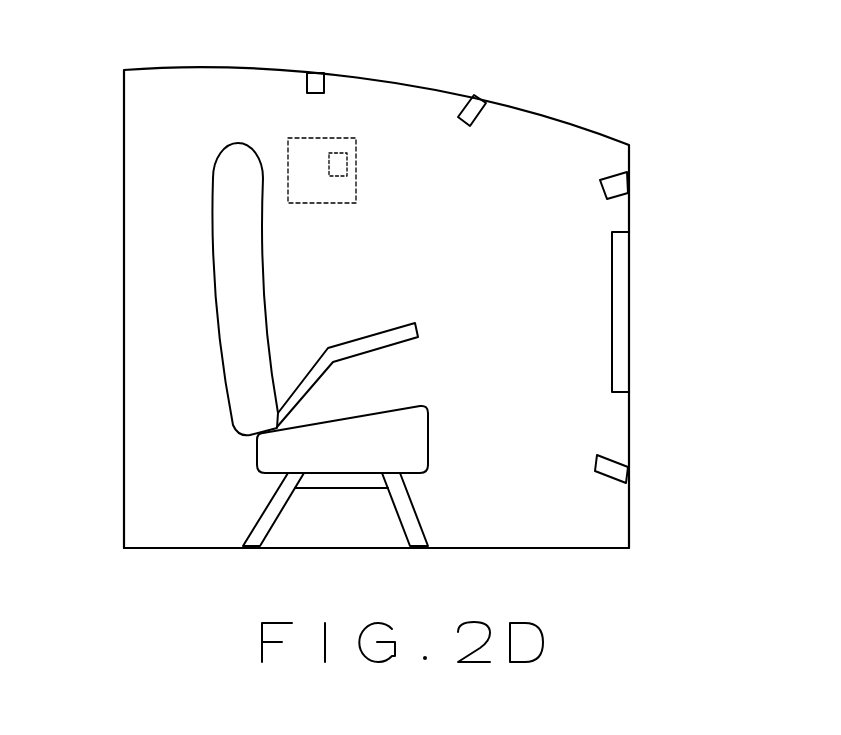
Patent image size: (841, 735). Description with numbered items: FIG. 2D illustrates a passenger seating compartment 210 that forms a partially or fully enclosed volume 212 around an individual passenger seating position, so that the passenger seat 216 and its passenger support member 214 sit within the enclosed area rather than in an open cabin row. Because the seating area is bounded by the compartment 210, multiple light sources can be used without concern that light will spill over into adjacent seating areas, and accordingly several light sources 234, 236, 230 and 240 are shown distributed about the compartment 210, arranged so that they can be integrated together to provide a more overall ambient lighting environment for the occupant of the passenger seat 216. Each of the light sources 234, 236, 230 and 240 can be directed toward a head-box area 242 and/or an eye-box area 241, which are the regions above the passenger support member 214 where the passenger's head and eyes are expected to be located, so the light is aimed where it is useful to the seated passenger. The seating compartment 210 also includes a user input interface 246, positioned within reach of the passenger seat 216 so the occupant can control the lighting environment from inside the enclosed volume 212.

The passenger compartment 210 is at (118, 368).
The enclosed volume 212 is at (547, 517).
The passenger support member 214 is at (257, 462).
The passenger seat 216 is at (299, 347).
The light source 230 is at (617, 184).
The light source 234 is at (317, 80).
The light source 236 is at (478, 106).
The light source 240 is at (615, 472).
The eye-box area 241 is at (330, 167).
The head-box area 242 is at (310, 138).
The user input interface 246 is at (620, 330).